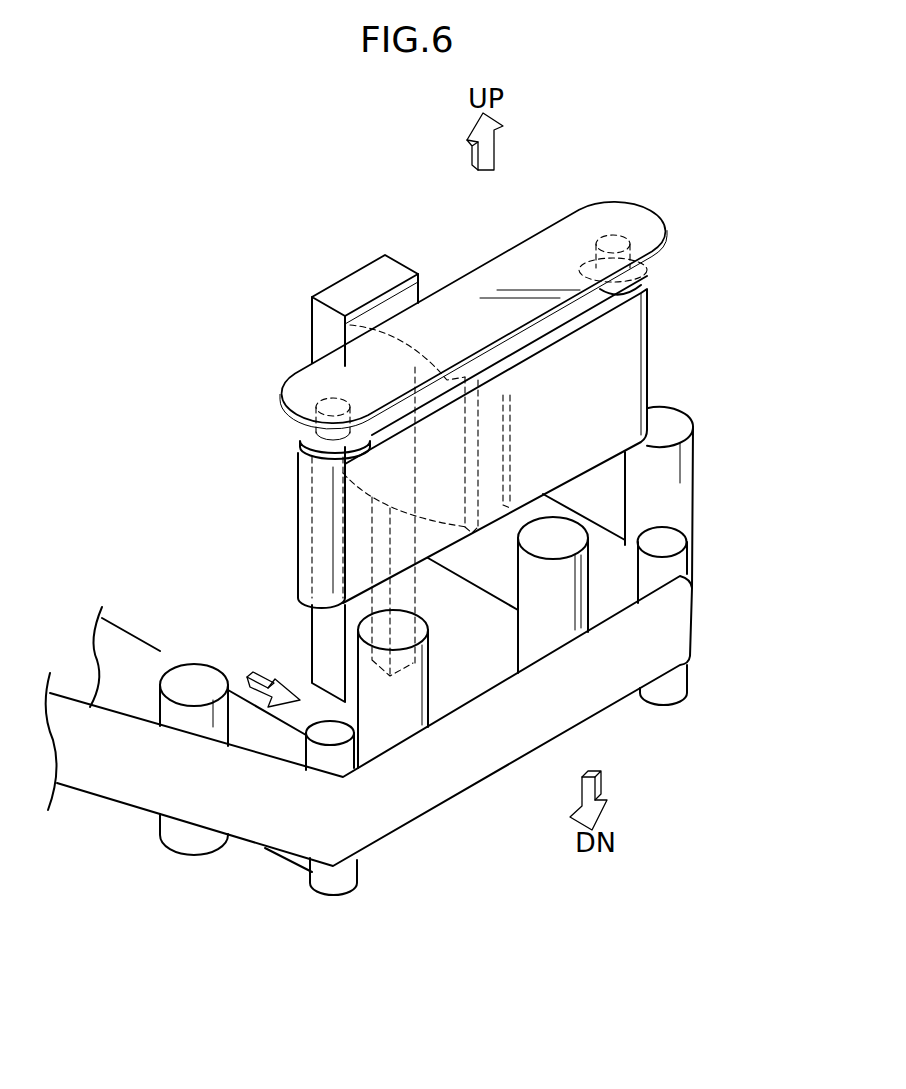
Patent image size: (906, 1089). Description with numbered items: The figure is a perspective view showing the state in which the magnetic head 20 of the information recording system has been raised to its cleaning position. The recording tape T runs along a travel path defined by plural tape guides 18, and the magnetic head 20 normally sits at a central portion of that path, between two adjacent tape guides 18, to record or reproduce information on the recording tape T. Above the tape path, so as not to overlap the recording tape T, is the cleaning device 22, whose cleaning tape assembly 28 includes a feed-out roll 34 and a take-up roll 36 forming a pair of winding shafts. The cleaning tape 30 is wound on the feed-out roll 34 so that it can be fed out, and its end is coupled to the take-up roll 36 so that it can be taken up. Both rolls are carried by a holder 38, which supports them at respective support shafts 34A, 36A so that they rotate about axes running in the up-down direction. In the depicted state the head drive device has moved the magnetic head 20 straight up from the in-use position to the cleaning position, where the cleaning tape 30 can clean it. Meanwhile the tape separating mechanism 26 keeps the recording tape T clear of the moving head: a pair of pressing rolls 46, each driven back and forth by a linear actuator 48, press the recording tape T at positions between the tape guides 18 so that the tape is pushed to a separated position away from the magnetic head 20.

The tape guide 18 is at (673, 495).
The magnetic head 20 is at (515, 411).
The cleaning device 22 is at (510, 378).
The tape separating mechanism 26 is at (400, 262).
The cleaning tape assembly 28 is at (510, 378).
The cleaning tape 30 is at (612, 361).
The feed-out roll 34 is at (648, 273).
The support shaft 34A is at (618, 235).
The take-up roll 36 is at (302, 444).
The support shaft 36A is at (332, 397).
The holder 38 is at (553, 238).
The pressing roll 46 is at (677, 567).
The linear actuator 48 is at (303, 858).
The recording tape T is at (573, 712).